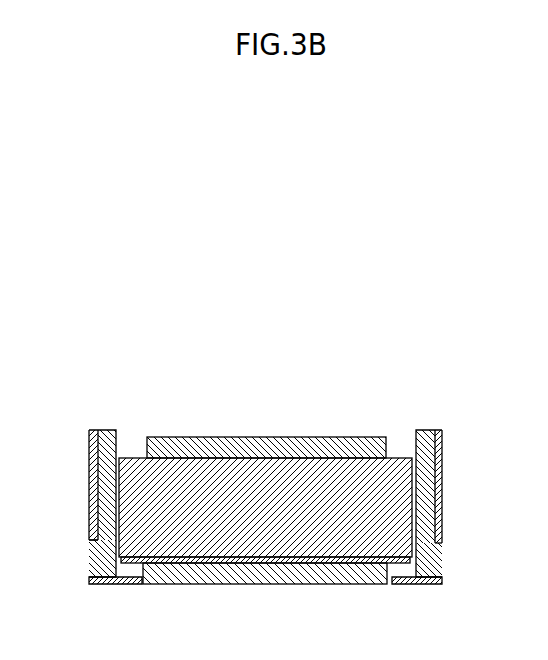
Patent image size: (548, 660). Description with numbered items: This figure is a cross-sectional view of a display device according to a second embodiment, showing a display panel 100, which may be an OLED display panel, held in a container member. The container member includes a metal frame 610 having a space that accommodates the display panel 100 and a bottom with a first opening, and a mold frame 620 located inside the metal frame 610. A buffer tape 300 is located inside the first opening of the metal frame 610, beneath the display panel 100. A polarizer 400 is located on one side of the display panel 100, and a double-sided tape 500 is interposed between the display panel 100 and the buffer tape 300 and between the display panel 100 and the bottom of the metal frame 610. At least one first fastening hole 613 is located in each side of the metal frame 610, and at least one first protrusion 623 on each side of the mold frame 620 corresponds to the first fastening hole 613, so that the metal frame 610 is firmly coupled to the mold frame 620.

The display panel 100 is at (414, 548).
The buffer tape 300 is at (309, 585).
The polarizer 400 is at (312, 437).
The double-sided tape 500 is at (414, 560).
The metal frame 610 is at (433, 508).
The first fastening hole 613 is at (88, 535).
The mold frame 620 is at (437, 470).
The first protrusion 623 is at (100, 577).